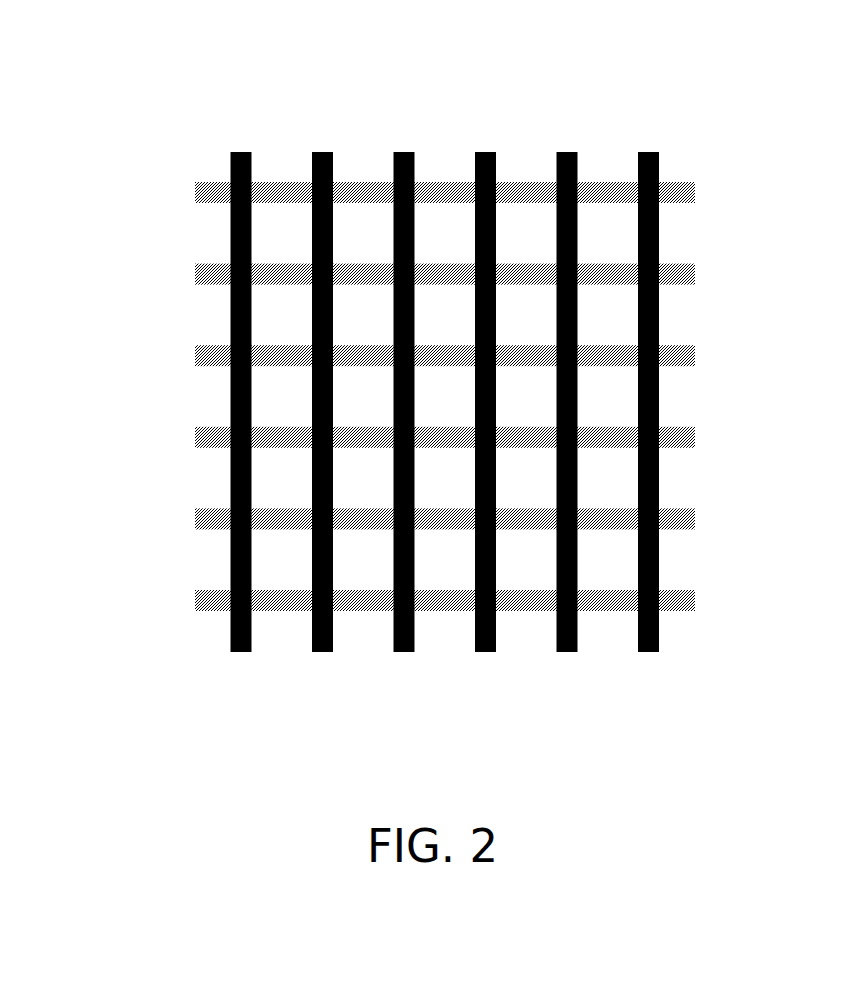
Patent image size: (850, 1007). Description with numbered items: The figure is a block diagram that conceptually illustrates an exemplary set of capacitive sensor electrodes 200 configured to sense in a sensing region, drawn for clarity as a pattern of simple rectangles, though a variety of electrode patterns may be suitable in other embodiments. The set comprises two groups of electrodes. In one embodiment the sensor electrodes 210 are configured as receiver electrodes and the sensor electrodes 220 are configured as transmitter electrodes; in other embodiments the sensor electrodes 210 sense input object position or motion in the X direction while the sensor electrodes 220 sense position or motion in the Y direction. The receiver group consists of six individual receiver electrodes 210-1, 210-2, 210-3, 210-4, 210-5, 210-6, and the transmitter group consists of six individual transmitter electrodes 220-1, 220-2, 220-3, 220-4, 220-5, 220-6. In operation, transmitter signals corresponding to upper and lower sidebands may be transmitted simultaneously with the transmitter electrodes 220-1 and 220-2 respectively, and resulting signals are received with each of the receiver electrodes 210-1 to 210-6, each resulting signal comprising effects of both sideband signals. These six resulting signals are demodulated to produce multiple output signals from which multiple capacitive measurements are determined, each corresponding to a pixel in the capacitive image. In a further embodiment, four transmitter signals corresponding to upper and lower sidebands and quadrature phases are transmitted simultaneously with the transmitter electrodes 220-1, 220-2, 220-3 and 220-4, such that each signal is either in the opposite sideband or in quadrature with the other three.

The set of capacitive sensor electrodes 200 is at (188, 130).
The sensor electrodes 210 is at (673, 135).
The receiver electrode 210-1 is at (242, 652).
The receiver electrode 210-2 is at (324, 652).
The receiver electrode 210-3 is at (405, 652).
The receiver electrode 210-4 is at (486, 652).
The receiver electrode 210-5 is at (568, 652).
The receiver electrode 210-6 is at (650, 652).
The sensor electrodes 220 is at (717, 618).
The transmitter electrode 220-1 is at (195, 192).
The transmitter electrode 220-2 is at (195, 274).
The transmitter electrode 220-3 is at (195, 355).
The transmitter electrode 220-4 is at (195, 437).
The transmitter electrode 220-5 is at (195, 518).
The transmitter electrode 220-6 is at (195, 600).